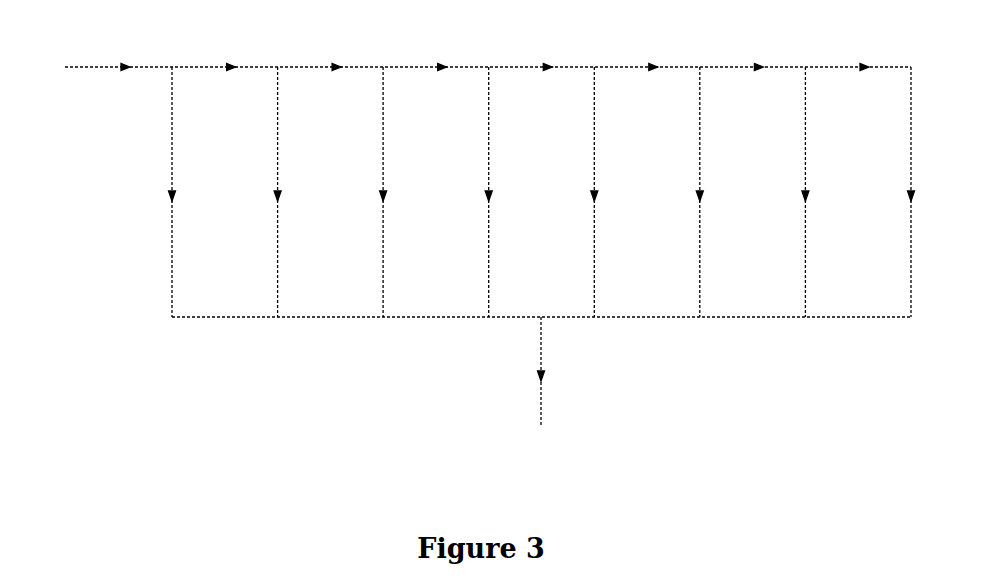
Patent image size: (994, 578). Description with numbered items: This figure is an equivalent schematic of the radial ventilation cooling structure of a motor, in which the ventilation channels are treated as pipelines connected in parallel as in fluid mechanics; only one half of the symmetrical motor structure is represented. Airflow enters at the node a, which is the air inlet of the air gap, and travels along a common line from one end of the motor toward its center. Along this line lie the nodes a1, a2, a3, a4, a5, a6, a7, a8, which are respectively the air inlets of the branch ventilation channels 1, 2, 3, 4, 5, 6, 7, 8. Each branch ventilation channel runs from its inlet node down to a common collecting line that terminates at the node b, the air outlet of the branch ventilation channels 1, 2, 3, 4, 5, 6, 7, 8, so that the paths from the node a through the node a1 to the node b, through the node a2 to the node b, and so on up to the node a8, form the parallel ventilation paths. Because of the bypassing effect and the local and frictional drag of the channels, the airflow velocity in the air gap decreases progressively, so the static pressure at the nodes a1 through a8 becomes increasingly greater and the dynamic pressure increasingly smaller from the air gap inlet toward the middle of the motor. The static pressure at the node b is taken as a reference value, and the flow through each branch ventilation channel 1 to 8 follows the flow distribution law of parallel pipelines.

The node a is at (475, 66).
The node a1 is at (152, 117).
The node a2 is at (258, 117).
The node a3 is at (363, 117).
The node a4 is at (469, 117).
The node a5 is at (574, 117).
The node a6 is at (680, 117).
The node a7 is at (785, 117).
The node a8 is at (891, 117).
The branch ventilation channel 1 is at (163, 251).
The branch ventilation channel 2 is at (268, 251).
The branch ventilation channel 3 is at (374, 251).
The branch ventilation channel 4 is at (479, 251).
The branch ventilation channel 5 is at (585, 251).
The branch ventilation channel 6 is at (690, 251).
The branch ventilation channel 7 is at (796, 251).
The branch ventilation channel 8 is at (902, 251).
The node b is at (541, 386).